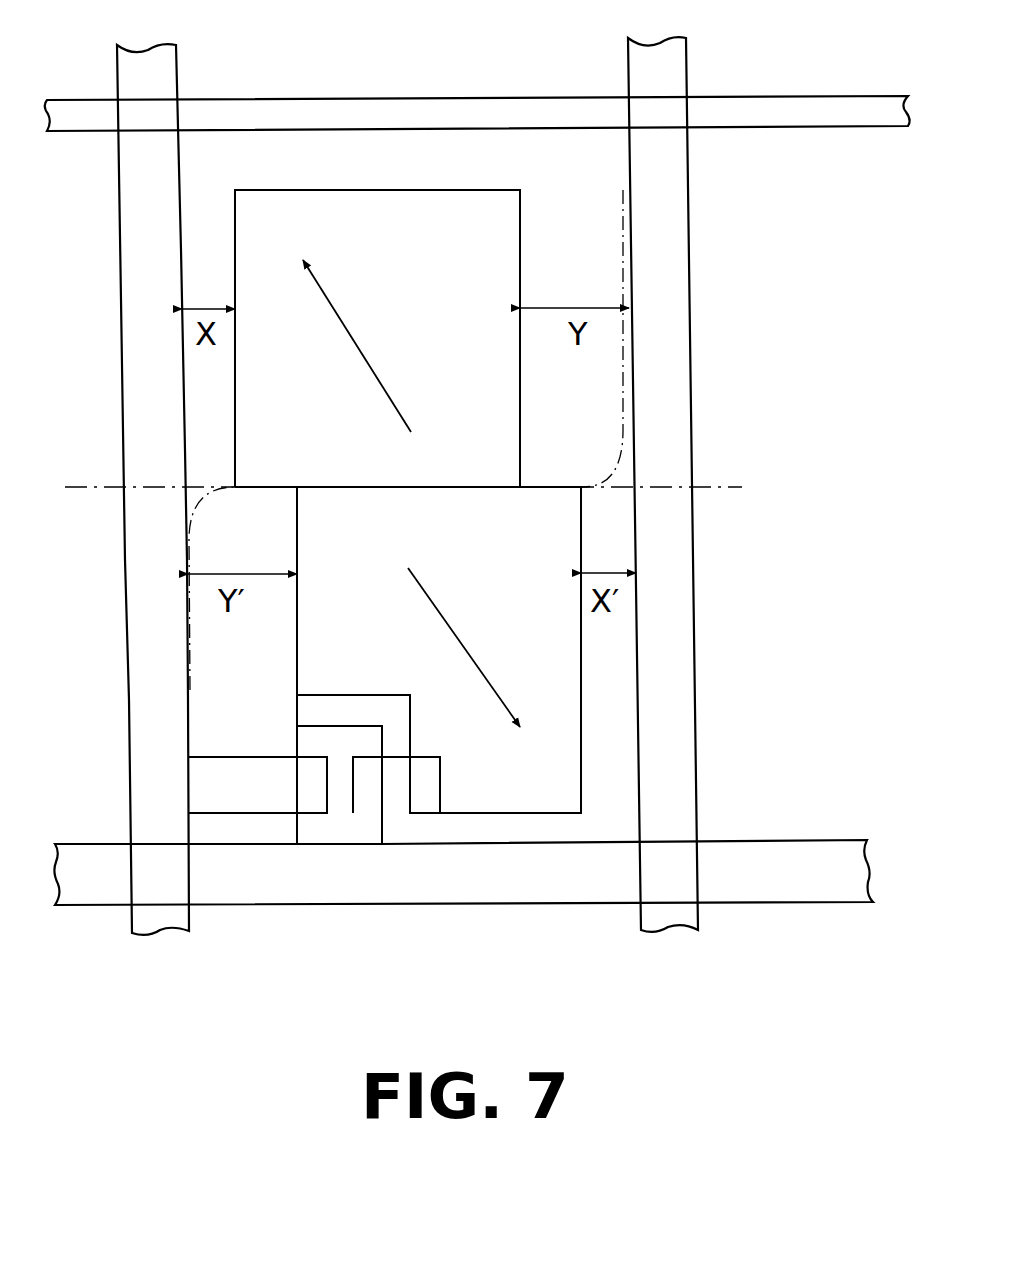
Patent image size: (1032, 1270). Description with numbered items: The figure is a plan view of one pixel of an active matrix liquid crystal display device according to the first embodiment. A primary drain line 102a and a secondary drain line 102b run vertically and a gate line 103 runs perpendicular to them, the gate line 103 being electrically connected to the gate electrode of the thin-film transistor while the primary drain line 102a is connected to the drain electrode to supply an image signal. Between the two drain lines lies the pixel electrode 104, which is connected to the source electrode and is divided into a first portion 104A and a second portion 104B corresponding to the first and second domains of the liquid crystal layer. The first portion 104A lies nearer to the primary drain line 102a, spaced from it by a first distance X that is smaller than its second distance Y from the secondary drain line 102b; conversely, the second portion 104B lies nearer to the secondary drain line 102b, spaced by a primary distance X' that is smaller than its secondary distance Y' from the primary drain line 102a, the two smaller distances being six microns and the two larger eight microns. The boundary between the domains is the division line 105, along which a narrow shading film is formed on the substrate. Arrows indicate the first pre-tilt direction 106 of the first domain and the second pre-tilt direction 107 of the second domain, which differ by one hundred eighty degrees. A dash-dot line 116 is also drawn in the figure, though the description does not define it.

The primary drain line 102a is at (157, 70).
The secondary drain line 102b is at (676, 62).
The gate line 103 is at (77, 127).
The pixel electrode 104 is at (492, 492).
The first portion of the pixel electrode 104A is at (267, 207).
The second portion of the pixel electrode 104B is at (560, 692).
The division line 105 is at (441, 483).
The first pre-tilt direction 106 is at (353, 335).
The second pre-tilt direction 107 is at (453, 637).
The cut line 116 is at (628, 285).